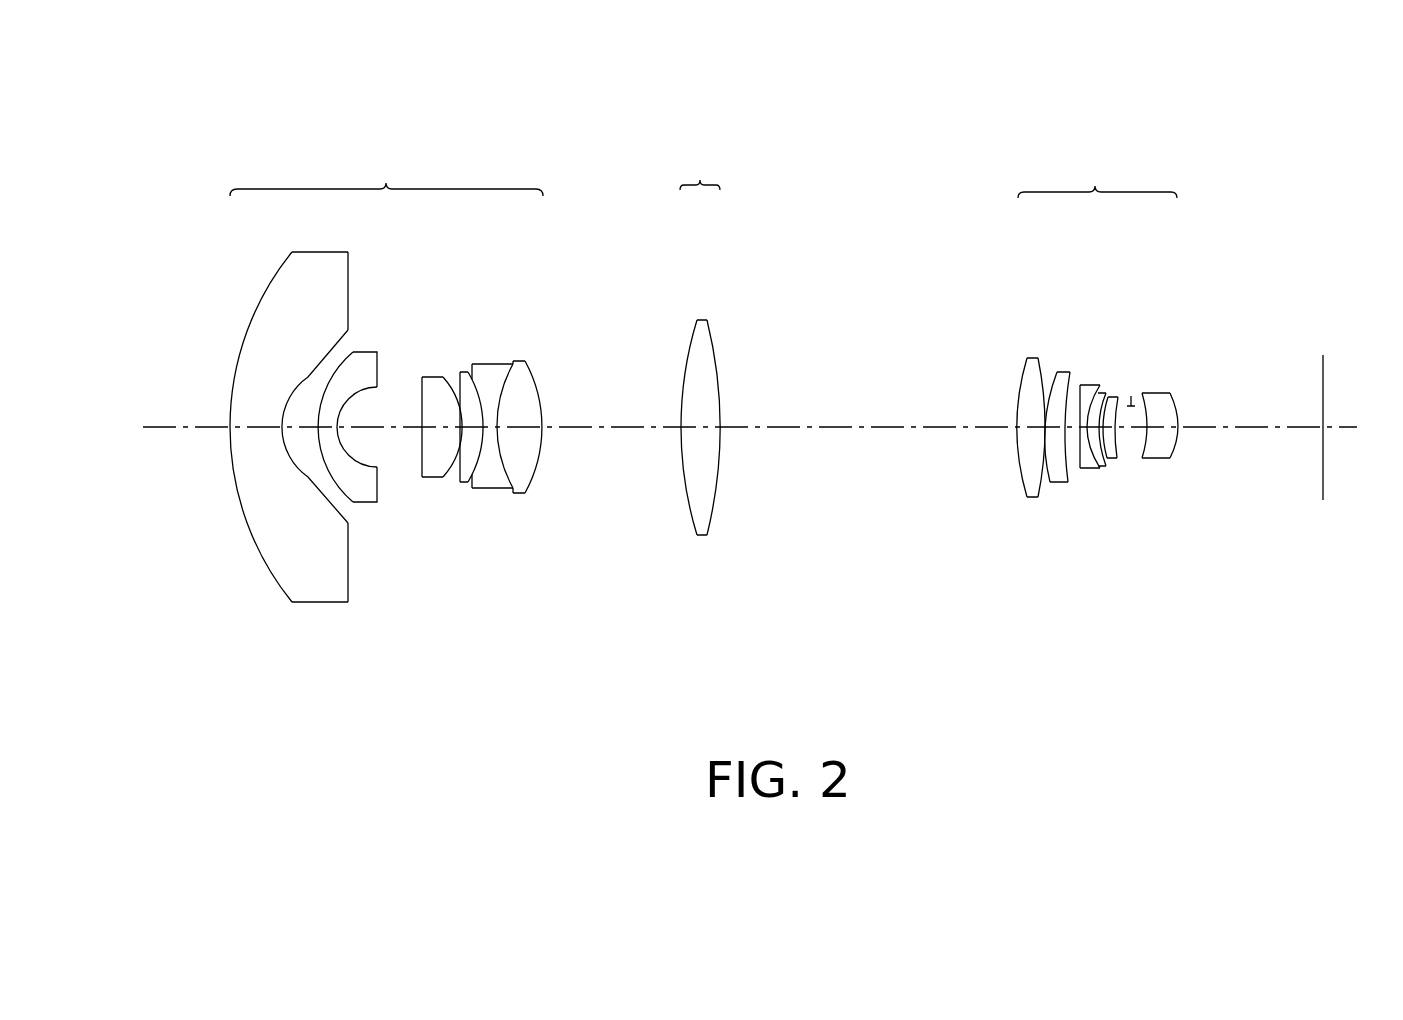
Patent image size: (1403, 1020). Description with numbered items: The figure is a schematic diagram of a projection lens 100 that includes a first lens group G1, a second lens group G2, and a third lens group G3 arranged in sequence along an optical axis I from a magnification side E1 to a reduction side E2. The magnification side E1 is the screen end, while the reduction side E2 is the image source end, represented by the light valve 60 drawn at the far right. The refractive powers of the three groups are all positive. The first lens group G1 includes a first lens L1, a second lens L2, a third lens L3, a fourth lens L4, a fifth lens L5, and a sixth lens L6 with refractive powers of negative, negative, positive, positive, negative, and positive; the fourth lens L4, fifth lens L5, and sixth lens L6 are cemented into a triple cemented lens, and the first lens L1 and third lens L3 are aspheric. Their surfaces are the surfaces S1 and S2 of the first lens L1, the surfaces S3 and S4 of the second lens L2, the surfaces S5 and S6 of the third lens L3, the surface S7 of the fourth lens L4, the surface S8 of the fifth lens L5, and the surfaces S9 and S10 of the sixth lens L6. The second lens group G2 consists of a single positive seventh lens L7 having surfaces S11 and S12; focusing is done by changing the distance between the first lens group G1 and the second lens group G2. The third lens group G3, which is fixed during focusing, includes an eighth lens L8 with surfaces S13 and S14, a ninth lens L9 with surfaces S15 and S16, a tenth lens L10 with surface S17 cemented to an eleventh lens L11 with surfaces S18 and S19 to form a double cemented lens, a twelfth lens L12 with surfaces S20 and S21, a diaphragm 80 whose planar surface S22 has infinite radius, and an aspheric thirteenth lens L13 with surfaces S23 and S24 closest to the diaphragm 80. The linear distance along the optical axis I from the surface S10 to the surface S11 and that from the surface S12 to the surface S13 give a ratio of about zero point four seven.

The projection lens 100 is at (184, 150).
The optical axis I is at (170, 425).
The magnification side E1 is at (137, 308).
The reduction side E2 is at (1365, 310).
The first lens group G1 is at (417, 424).
The second lens group G2 is at (711, 405).
The third lens group G3 is at (1089, 423).
The first lens L1 is at (328, 273).
The second lens L2 is at (360, 363).
The third lens L3 is at (433, 390).
The fourth lens L4 is at (466, 382).
The fifth lens L5 is at (492, 375).
The sixth lens L6 is at (522, 378).
The seventh lens L7 is at (698, 347).
The eighth lens L8 is at (1023, 392).
The ninth lens L9 is at (1060, 383).
The tenth lens L10 is at (1087, 390).
The eleventh lens L11 is at (1098, 390).
The twelfth lens L12 is at (1112, 397).
The thirteenth lens L13 is at (1157, 392).
The surface S1 is at (272, 576).
The surface S2 is at (341, 514).
The surface S3 is at (341, 490).
The surface S4 is at (357, 457).
The surface S5 is at (413, 448).
The surface S6 is at (448, 473).
The surface S7 is at (458, 468).
The surface S8 is at (477, 471).
The surface S9 is at (504, 466).
The surface S10 is at (538, 467).
The surface S11 is at (689, 511).
The surface S12 is at (714, 509).
The surface S13 is at (1020, 474).
The surface S14 is at (1040, 479).
The surface S15 is at (1050, 476).
The surface S16 is at (1065, 453).
The surface S17 is at (1078, 448).
The surface S18 is at (1090, 453).
The surface S19 is at (1102, 453).
The surface S20 is at (1106, 459).
The surface S21 is at (1118, 456).
The surface S22 is at (1141, 449).
The surface S23 is at (1135, 458).
The surface S24 is at (1179, 445).
The diaphragm 80 is at (1130, 395).
The light valve 60 is at (1325, 483).